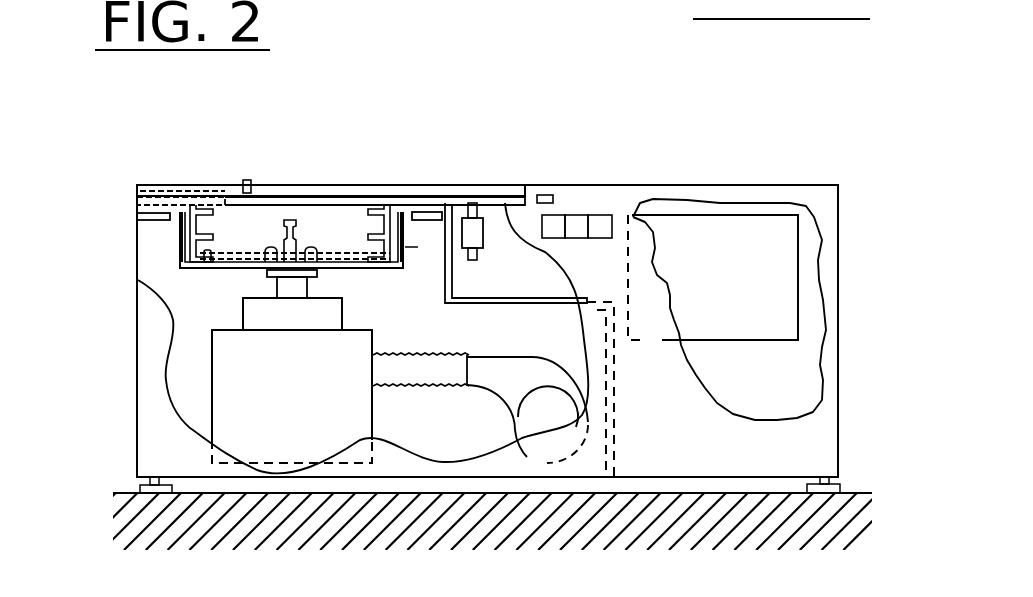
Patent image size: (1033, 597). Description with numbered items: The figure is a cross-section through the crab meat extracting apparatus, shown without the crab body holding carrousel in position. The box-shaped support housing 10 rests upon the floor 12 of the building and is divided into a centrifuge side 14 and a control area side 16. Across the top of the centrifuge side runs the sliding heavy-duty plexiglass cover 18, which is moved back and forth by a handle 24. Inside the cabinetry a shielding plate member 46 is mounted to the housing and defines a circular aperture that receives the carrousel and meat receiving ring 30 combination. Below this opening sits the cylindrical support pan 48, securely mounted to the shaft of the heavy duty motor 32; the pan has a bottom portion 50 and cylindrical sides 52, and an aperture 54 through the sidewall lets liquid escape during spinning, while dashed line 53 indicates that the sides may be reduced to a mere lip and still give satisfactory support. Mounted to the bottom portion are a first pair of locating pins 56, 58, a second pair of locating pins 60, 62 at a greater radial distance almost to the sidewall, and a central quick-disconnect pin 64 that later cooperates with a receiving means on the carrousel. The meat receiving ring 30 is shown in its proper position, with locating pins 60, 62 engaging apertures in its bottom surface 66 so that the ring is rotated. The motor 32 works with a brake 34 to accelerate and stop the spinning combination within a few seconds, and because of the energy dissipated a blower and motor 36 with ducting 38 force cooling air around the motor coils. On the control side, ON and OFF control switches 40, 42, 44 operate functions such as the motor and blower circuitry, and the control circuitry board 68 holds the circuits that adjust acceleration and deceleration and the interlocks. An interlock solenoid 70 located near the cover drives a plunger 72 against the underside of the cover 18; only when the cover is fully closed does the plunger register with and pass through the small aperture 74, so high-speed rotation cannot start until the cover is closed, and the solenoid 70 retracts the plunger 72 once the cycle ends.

The housing 10 is at (823, 205).
The floor 12 is at (500, 533).
The centrifuge side 14 is at (157, 185).
The control area side 16 is at (697, 185).
The plexiglass cover 18 is at (466, 200).
The handle 24 is at (247, 180).
The meat receiving ring 30 is at (175, 197).
The heavy duty motor 32 is at (317, 420).
The brake 34 is at (265, 315).
The blower and motor 36 is at (527, 423).
The ducting 38 is at (430, 372).
The ON and OFF control switch 40 is at (557, 214).
The ON and OFF control switch 42 is at (578, 214).
The ON and OFF control switch 44 is at (600, 214).
The shielding plate member 46 is at (418, 187).
The support pan 48 is at (153, 303).
The bottom portion 50 is at (235, 272).
The cylindrical sides 52 is at (175, 258).
The dashed line 53 is at (178, 250).
The aperture 54 is at (413, 262).
The locating pin 56 is at (212, 250).
The locating pin 58 is at (352, 205).
The locating pin 60 is at (190, 246).
The locating pin 62 is at (313, 247).
The quick-disconnect pin 64 is at (292, 219).
The bottom surface 66 is at (270, 246).
The control circuitry board 68 is at (770, 318).
The interlock solenoid 70 is at (477, 238).
The plunger 72 is at (480, 213).
The aperture 74 is at (533, 195).